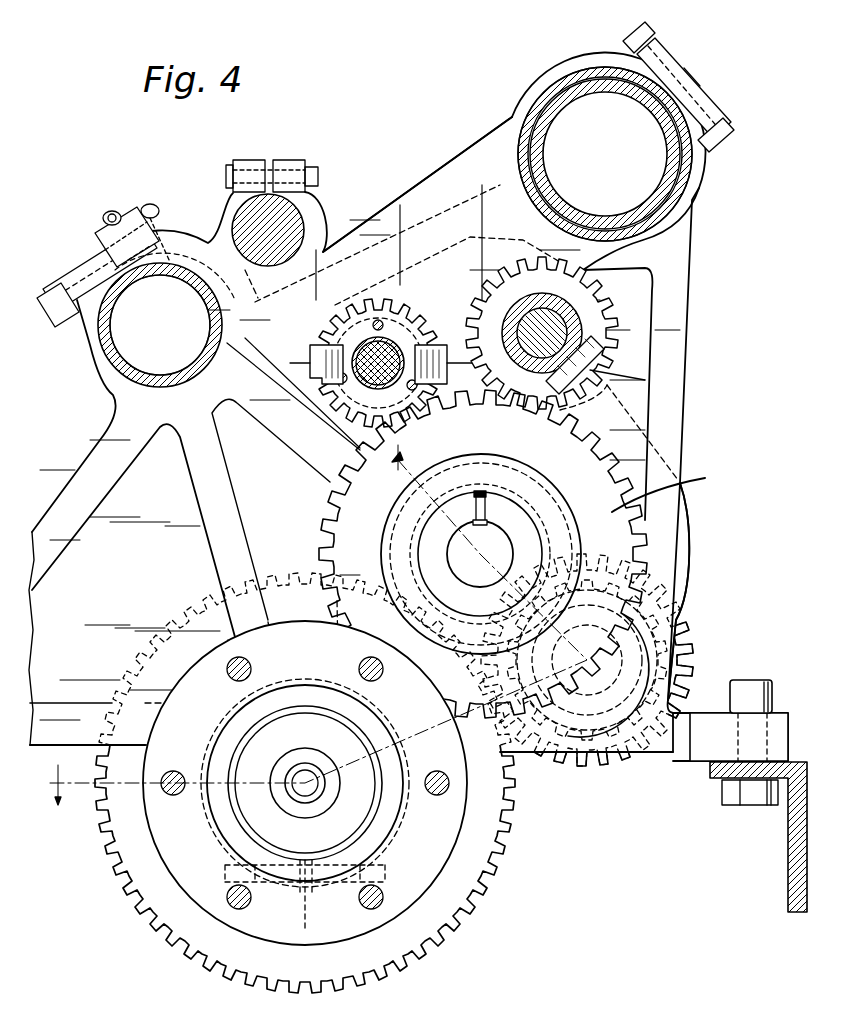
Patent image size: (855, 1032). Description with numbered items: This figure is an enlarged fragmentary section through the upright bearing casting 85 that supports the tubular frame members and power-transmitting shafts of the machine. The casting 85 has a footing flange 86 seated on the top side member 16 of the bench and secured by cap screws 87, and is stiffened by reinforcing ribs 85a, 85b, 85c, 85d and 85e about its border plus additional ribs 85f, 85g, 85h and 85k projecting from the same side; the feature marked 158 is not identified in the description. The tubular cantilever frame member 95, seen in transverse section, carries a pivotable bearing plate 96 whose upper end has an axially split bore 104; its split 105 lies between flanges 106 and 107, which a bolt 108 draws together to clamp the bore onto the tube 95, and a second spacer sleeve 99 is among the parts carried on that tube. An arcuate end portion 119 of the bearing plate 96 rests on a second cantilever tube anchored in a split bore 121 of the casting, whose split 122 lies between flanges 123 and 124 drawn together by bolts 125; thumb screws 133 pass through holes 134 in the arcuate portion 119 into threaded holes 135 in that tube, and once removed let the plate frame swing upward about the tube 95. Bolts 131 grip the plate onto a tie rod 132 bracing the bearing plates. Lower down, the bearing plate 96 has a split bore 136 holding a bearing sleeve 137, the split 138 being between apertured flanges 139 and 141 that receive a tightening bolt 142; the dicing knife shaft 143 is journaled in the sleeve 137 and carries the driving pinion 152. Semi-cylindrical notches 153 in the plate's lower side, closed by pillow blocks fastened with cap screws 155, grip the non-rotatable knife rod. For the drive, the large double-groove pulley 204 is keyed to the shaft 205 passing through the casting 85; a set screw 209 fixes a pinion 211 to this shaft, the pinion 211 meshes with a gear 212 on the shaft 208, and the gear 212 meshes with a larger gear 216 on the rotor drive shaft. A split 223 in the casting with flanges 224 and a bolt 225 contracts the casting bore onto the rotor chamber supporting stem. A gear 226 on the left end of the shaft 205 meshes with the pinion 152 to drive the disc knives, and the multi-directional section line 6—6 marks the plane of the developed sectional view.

The section line 6 is at (311, 623).
The top side member 16 is at (788, 882).
The bearing casting 85 is at (640, 410).
The reinforcing rib 85a is at (690, 330).
The reinforcing rib 85b is at (420, 225).
The reinforcing rib 85c is at (88, 448).
The reinforcing rib 85d is at (72, 745).
The reinforcing rib 85e is at (545, 755).
The reinforcing rib 85f is at (205, 497).
The reinforcing rib 85g is at (300, 430).
The reinforcing rib 85h is at (496, 256).
The reinforcing rib 85k is at (350, 578).
The footing flange 86 is at (775, 722).
The cap screws 87 is at (745, 680).
The tubular cantilever frame member 95 is at (575, 95).
The pivotable bearing plate 96 is at (470, 155).
The second spacer sleeve 99 is at (690, 180).
The split bore 104 is at (545, 105).
The split 105 is at (688, 85).
The flange 106 is at (660, 38).
The flange 107 is at (708, 100).
The bolt 108 is at (728, 128).
The arcuate end portion 119 is at (175, 240).
The split bore 121 is at (100, 345).
The split 122 is at (105, 240).
The flange 123 is at (108, 213).
The flange 124 is at (75, 260).
The bolts 125 is at (52, 290).
The bolts 131 is at (232, 163).
The tie rod 132 is at (300, 222).
The thumb screws 133 is at (114, 212).
The holes 134 is at (152, 212).
The threaded holes 135 is at (160, 265).
The split bore 136 is at (590, 310).
The bearing sleeve 137 is at (598, 338).
The split 138 is at (590, 405).
The apertured flange 139 is at (650, 378).
The apertured flange 141 is at (370, 340).
The tightening bolt 142 is at (600, 353).
The dicing knife shaft 143 is at (528, 312).
The driving pinion 152 is at (463, 450).
The semi-cylindrical notches 153 is at (395, 318).
The cap screws 155 is at (320, 345).
The housing rib 158 is at (330, 402).
The double groove pulley 204 is at (693, 545).
The shaft 205 is at (480, 554).
The shaft 208 is at (618, 755).
The set screw 209 is at (480, 491).
The pinion 211 is at (560, 500).
The gear 212 is at (690, 640).
The gear 216 is at (480, 885).
The split 223 is at (303, 900).
The flanges 224 is at (245, 905).
The bolt 225 is at (385, 870).
The gear 226 is at (674, 494).